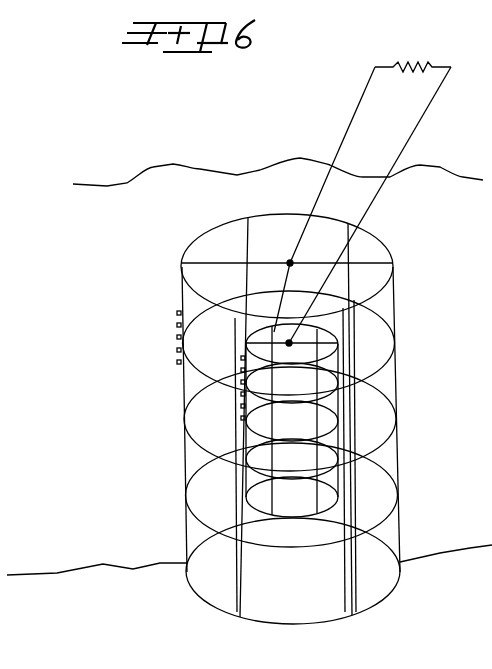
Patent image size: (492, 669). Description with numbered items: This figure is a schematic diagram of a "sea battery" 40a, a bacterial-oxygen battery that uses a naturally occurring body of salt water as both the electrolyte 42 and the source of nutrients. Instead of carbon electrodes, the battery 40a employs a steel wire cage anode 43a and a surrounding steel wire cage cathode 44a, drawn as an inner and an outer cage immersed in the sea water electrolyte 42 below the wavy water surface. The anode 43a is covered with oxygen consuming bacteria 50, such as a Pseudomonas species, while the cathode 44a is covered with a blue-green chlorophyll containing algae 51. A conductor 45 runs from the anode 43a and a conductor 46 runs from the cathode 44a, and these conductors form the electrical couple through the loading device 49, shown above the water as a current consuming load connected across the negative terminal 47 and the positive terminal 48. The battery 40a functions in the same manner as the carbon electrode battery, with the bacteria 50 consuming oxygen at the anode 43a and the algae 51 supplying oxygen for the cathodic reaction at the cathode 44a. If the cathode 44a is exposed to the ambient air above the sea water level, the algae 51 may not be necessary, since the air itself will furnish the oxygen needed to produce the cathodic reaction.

The battery 40a is at (397, 245).
The electrolyte 42 is at (452, 442).
The steel wire cage anode 43a is at (340, 348).
The steel wire cage cathode 44a is at (397, 308).
The conductor 45 is at (371, 213).
The conductor 46 is at (316, 204).
The negative terminal 47 is at (408, 145).
The positive terminal 48 is at (352, 128).
The current consuming load 49 is at (428, 64).
The oxygen consuming bacteria 50 is at (245, 400).
The blue-green chlorophyll containing algae 51 is at (178, 330).